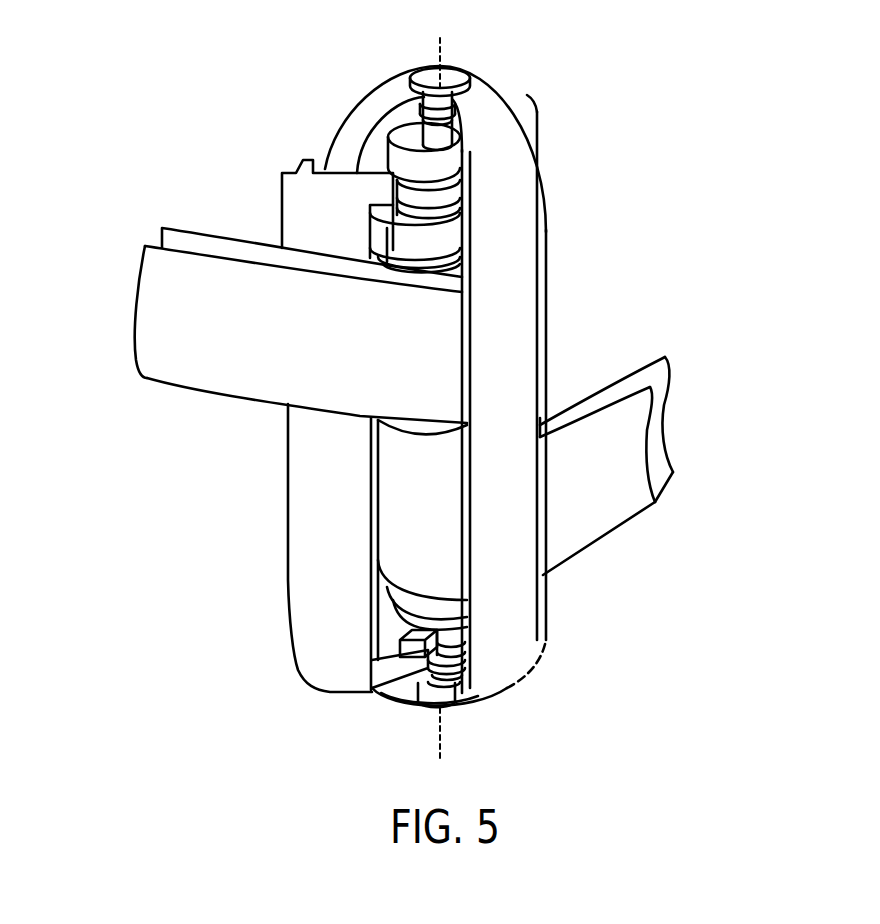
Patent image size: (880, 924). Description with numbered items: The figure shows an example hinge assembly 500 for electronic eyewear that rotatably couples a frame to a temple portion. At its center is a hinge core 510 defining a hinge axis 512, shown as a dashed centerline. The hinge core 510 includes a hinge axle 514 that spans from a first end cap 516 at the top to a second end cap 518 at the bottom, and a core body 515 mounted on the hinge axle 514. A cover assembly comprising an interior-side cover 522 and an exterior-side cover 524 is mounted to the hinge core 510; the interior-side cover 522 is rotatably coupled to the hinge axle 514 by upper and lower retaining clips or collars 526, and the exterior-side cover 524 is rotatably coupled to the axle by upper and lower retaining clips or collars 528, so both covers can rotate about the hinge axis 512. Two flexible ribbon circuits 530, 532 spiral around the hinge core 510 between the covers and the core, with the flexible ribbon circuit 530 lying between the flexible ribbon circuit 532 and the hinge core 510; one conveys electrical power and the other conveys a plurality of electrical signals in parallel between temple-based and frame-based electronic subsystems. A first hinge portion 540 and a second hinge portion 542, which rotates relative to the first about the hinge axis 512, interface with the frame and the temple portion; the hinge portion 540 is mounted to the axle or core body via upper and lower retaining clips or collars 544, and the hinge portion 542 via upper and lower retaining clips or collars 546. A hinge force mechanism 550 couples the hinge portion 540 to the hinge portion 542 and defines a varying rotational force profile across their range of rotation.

The hinge assembly 500 is at (616, 90).
The hinge core 510 is at (356, 473).
The hinge axis 512 is at (463, 396).
The hinge axle 514 is at (450, 142).
The core body 515 is at (393, 258).
The first end cap 516 is at (453, 80).
The second end cap 518 is at (430, 693).
The interior-side cover 522 is at (508, 277).
The exterior-side cover 524 is at (340, 133).
The retaining clips or collars 526 is at (449, 118).
The retaining clips or collars 528 is at (422, 108).
The flexible ribbon circuit 530 is at (193, 247).
The flexible ribbon circuit 532 is at (157, 310).
The first hinge portion 540 is at (295, 169).
The second hinge portion 542 is at (541, 106).
The retaining clips or collars 544 is at (450, 193).
The retaining clips or collars 546 is at (380, 223).
The hinge force mechanism 550 is at (398, 138).